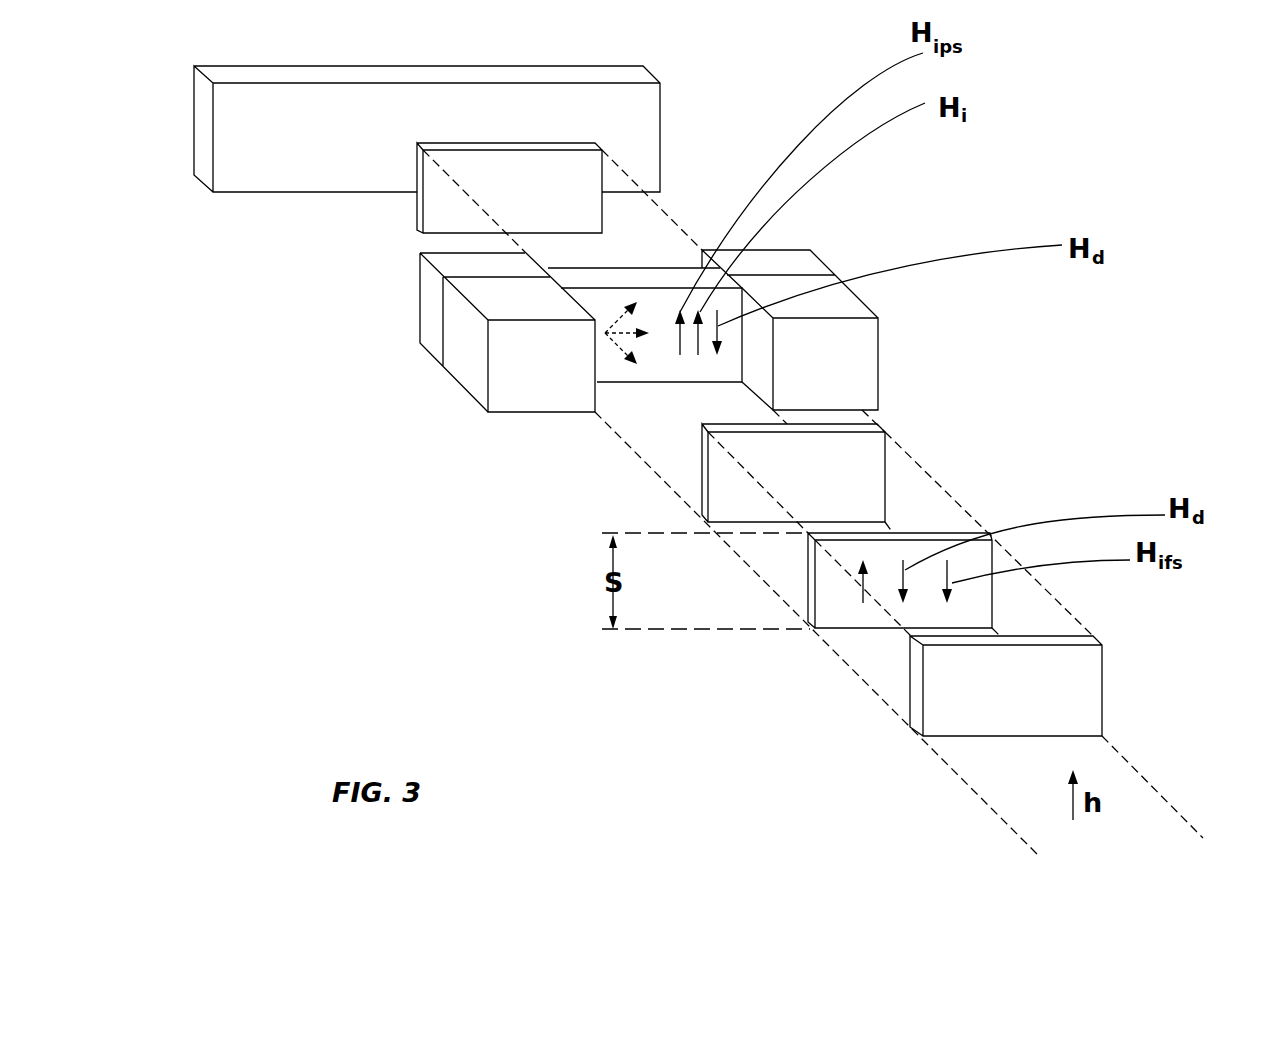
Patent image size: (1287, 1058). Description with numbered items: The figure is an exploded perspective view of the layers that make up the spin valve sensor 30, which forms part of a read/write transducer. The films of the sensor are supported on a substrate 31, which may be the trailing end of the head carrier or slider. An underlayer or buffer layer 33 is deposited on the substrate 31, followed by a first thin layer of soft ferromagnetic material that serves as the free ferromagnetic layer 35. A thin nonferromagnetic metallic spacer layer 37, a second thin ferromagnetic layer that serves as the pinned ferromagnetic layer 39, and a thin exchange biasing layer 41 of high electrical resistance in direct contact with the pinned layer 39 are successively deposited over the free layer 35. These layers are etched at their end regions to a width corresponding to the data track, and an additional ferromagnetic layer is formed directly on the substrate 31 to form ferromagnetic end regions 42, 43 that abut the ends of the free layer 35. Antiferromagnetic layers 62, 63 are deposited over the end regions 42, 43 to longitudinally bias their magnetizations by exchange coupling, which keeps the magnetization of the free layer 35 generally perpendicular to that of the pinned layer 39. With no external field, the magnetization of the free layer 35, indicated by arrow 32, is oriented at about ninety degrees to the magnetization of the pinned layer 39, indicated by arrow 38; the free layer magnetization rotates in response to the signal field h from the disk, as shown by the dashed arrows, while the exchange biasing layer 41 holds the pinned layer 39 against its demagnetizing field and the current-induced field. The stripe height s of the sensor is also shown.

The SV sensor 30 is at (993, 190).
The substrate 31 is at (636, 112).
The arrow indicating magnetization direction of free layer 32 is at (622, 337).
The underlayer or buffer layer 33 is at (447, 215).
The free ferromagnetic layer 35 is at (650, 285).
The nonferromagnetic metallic spacer layer 37 is at (865, 475).
The arrow indicating magnetization direction of pinned layer 38 is at (862, 590).
The pinned ferromagnetic layer 39 is at (973, 610).
The exchange biasing layer 41 is at (1055, 698).
The ferromagnetic end region 42 is at (435, 297).
The ferromagnetic end region 43 is at (797, 272).
The antiferromagnetic layer 62 is at (470, 372).
The antiferromagnetic layer 63 is at (862, 358).